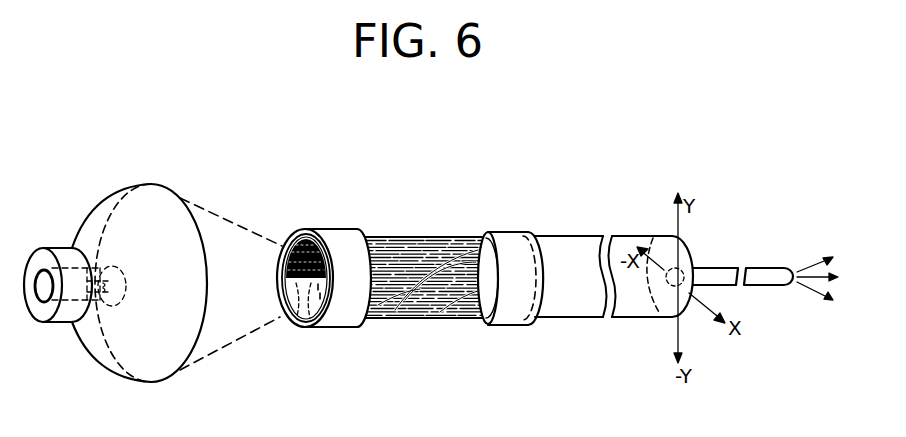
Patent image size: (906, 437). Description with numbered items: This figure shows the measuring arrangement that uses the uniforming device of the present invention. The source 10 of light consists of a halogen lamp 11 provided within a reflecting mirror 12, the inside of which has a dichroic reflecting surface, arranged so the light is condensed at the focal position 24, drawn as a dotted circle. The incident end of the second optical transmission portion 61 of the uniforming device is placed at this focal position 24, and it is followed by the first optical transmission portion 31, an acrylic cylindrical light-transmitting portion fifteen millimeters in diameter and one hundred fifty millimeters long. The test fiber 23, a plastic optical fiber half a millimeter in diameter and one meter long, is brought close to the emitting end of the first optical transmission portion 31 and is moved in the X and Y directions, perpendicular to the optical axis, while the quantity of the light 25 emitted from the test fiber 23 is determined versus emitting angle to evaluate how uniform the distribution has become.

The source of light 10 is at (127, 183).
The halogen lamp 11 is at (178, 369).
The reflecting mirror 12 is at (90, 222).
The focal position 24 is at (309, 300).
The second optical transmission portion 61 is at (413, 230).
The first optical transmission portion 31 is at (625, 322).
The test fiber 23 is at (773, 287).
The light emitted from the test fiber 25 is at (838, 253).